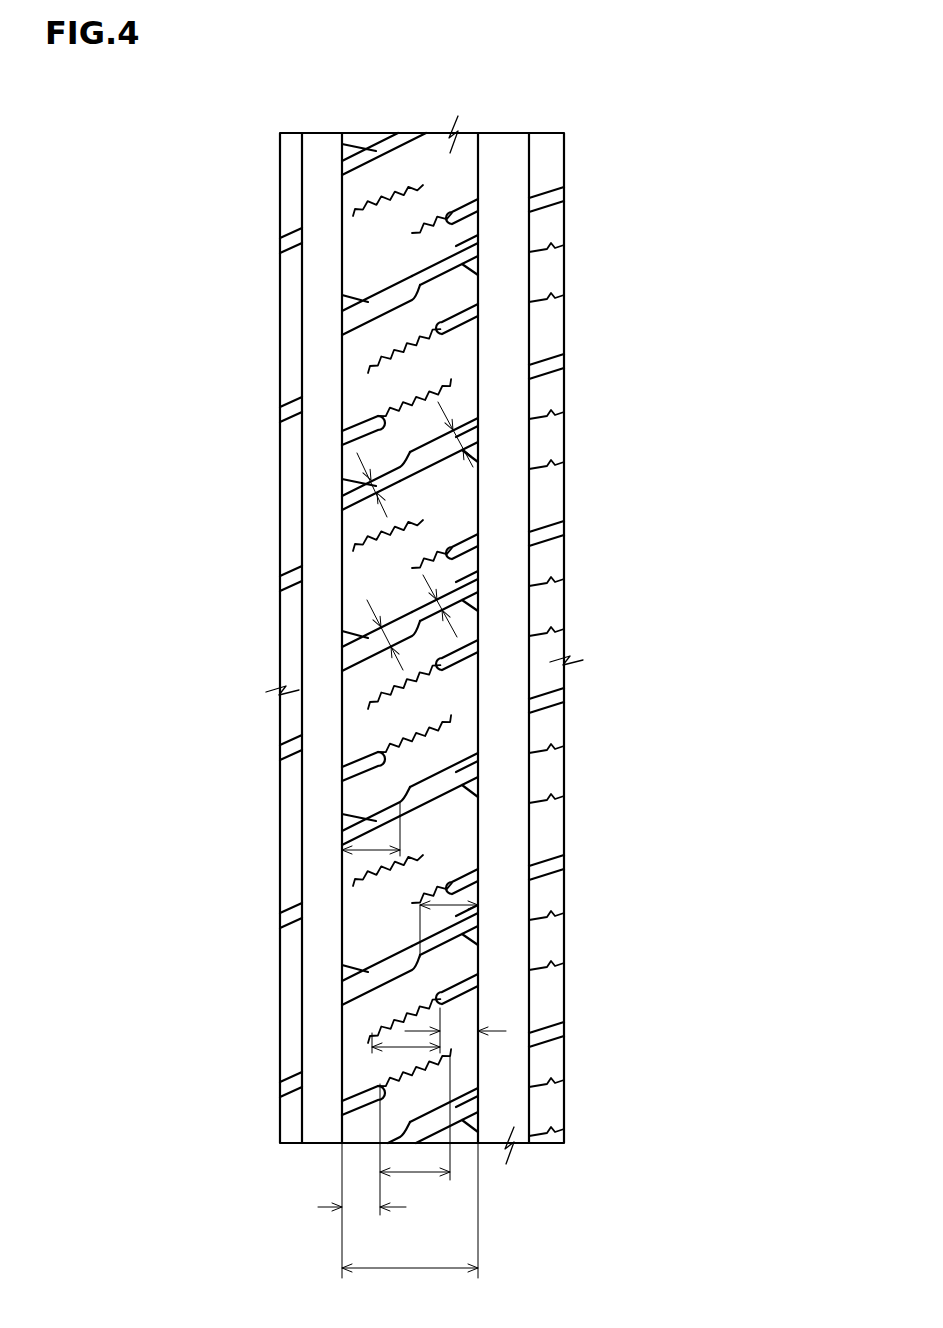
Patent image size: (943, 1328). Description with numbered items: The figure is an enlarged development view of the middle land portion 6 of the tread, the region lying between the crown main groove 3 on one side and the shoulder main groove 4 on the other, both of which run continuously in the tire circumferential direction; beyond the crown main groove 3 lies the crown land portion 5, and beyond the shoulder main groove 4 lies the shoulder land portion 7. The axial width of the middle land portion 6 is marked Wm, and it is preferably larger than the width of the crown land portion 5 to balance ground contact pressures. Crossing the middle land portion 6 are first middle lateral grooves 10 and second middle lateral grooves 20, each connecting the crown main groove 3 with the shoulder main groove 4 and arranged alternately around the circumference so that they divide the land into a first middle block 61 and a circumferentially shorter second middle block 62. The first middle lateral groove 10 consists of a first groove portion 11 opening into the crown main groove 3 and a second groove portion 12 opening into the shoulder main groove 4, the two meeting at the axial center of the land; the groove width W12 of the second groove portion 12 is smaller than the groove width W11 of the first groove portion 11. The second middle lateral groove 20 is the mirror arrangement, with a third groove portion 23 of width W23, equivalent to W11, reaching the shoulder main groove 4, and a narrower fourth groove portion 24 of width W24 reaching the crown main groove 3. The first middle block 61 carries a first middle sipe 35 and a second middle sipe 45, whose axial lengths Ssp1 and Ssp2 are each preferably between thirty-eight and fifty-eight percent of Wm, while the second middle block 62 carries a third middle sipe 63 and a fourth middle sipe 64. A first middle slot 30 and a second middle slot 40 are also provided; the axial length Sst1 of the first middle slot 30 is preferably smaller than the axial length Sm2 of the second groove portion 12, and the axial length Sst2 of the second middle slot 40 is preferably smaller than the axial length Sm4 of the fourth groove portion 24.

The crown main groove 3 is at (237, 638).
The shoulder main groove 4 is at (599, 638).
The crown land portion 5 is at (358, 638).
The middle land portion 6 is at (410, 600).
The shoulder land portion 7 is at (610, 661).
The first middle lateral groove 10 is at (424, 602).
The first groove portion 11 is at (312, 640).
The second groove portion 12 is at (472, 600).
The second middle lateral groove 20 is at (457, 638).
The third groove portion 23 is at (437, 453).
The fourth groove portion 24 is at (315, 638).
The first middle slot 30 is at (547, 654).
The first middle sipe 35 is at (322, 686).
The second middle slot 40 is at (295, 786).
The second middle sipe 45 is at (376, 1083).
The first middle block 61 is at (328, 741).
The second middle block 62 is at (552, 546).
The third middle sipe 63 is at (314, 535).
The fourth middle sipe 64 is at (535, 558).
The groove width of first groove portion W11 is at (384, 636).
The groove width of second groove portion W12 is at (442, 606).
The groove width of third groove portion W23 is at (460, 439).
The groove width of fourth groove portion W24 is at (373, 490).
The axial length of second groove portion Sm2 is at (480, 902).
The axial length of fourth groove portion Sm4 is at (340, 850).
The axial length of first middle sipe Ssp1 is at (368, 1047).
The axial length of second middle sipe Ssp2 is at (430, 1136).
The axial length of first middle slot Sst1 is at (482, 1034).
The axial length of second middle slot Sst2 is at (362, 1210).
The width of middle land portion Wm is at (410, 1223).